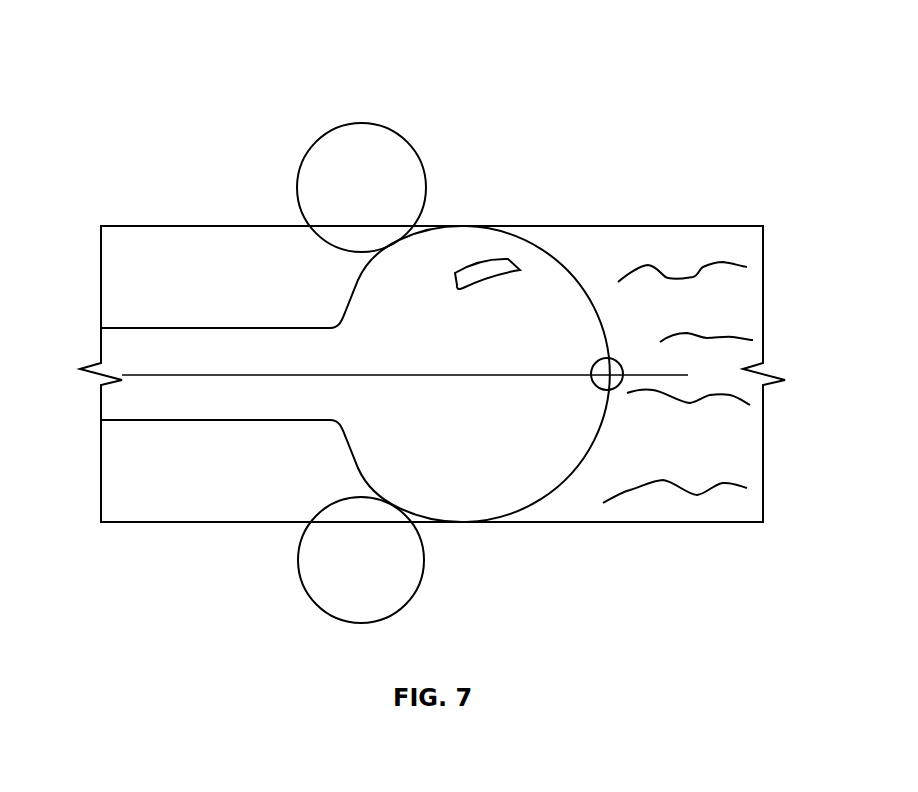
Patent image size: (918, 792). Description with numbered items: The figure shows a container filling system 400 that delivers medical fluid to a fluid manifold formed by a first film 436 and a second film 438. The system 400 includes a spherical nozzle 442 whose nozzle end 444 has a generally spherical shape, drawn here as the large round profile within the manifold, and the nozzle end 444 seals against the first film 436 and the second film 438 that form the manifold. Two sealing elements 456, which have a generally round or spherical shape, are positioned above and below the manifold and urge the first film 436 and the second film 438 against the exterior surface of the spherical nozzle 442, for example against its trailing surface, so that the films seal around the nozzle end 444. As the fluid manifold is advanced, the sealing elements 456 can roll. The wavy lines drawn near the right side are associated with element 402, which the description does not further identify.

The container filling system 400 is at (670, 64).
The elongate member 402 is at (723, 420).
The first film 436 is at (553, 523).
The second film 438 is at (697, 226).
The spherical nozzle 442 is at (122, 328).
The nozzle end 444 is at (512, 250).
The sealing elements 456 is at (358, 189).